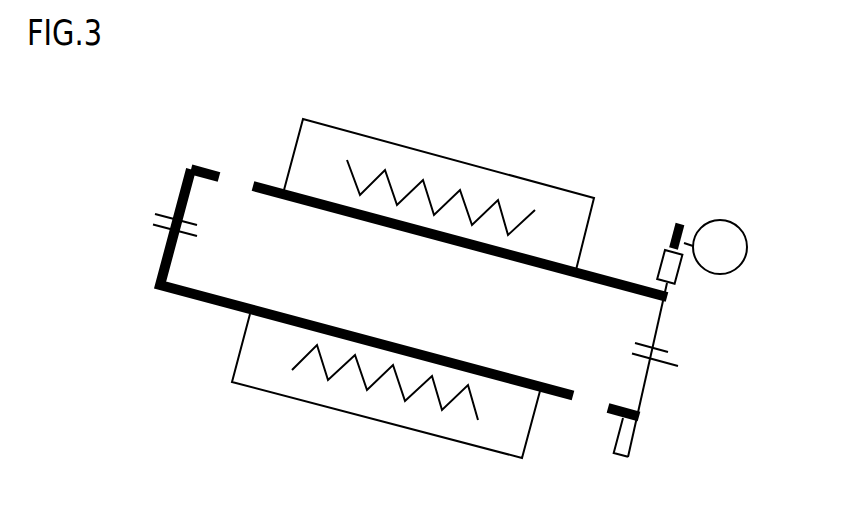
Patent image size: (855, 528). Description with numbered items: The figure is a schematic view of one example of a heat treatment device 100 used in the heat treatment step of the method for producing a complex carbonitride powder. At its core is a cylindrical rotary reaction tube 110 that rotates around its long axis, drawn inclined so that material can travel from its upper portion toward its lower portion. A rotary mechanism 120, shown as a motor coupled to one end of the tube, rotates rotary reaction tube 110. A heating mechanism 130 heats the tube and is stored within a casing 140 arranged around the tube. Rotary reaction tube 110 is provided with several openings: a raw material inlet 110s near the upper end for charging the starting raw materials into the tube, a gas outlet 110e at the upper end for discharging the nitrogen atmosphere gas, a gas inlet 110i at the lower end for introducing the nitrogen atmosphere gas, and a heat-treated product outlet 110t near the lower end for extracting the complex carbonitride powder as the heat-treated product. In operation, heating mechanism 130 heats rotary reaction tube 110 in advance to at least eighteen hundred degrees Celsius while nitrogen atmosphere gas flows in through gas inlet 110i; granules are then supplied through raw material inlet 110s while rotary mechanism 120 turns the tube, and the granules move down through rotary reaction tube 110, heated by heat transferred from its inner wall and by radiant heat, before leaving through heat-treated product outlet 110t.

The heat treatment device 100 is at (657, 102).
The rotary reaction tube 110 is at (350, 225).
The raw material inlet 110s is at (235, 178).
The gas outlet 110e is at (155, 215).
The gas inlet 110i is at (677, 364).
The heat-treated product outlet 110t is at (592, 402).
The rotary mechanism 120 is at (728, 221).
The heating mechanism 130 is at (389, 181).
The casing 140 is at (497, 170).